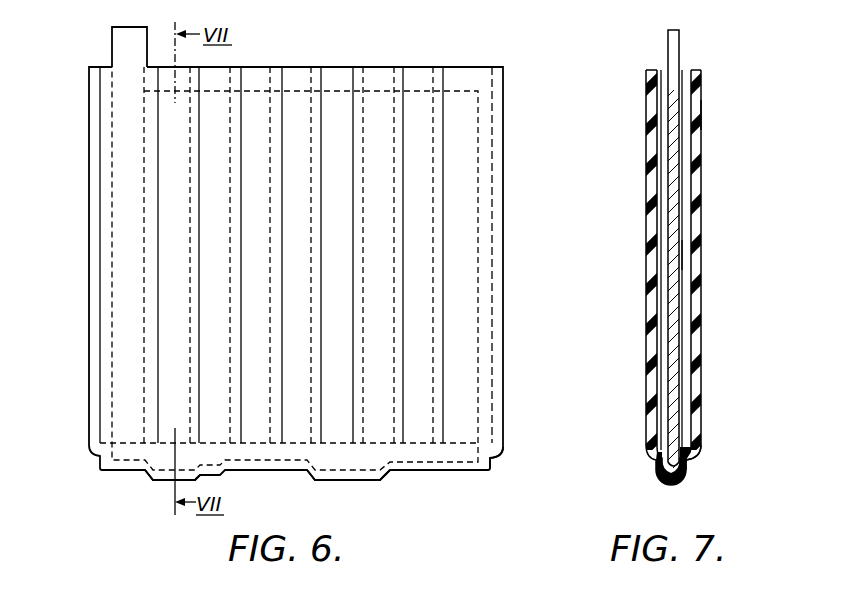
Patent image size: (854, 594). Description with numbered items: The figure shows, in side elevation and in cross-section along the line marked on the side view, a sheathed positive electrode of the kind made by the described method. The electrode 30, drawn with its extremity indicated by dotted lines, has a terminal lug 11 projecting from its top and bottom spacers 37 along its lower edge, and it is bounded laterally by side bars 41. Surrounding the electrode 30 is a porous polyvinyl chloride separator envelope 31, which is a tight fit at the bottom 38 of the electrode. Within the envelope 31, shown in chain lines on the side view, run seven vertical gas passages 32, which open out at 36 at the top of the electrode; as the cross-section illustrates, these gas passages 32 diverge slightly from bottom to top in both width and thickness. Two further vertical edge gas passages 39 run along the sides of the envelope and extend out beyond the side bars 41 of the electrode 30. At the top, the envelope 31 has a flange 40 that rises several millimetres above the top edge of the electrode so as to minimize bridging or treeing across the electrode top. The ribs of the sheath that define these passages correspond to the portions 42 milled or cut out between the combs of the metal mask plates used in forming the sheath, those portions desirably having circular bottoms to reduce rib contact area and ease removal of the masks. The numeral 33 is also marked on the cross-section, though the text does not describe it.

In FIG. 6, the terminal lug 11 is at (120, 53).
In FIG. 7, the terminal lug 11 is at (675, 47).
In FIG. 6, the electrode 30 is at (482, 112).
In FIG. 7, the electrode 30 is at (672, 219).
In FIG. 7, the porous polyvinyl chloride separator envelope 31 is at (697, 115).
In FIG. 6, the gas passages 32 is at (281, 112).
In FIG. 7, the gas passages 32 is at (684, 258).
In FIG. 7, the rear surface layer 33 is at (683, 70).
In FIG. 6, the gas passage openings 36 is at (378, 67).
In FIG. 7, the gas passage openings 36 is at (659, 62).
In FIG. 6, the bottom spacers 37 is at (153, 474).
In FIG. 6, the bottom of the electrode 38 is at (492, 461).
In FIG. 7, the bottom of the electrode 38 is at (692, 465).
In FIG. 6, the vertical edge gas passages 39 is at (100, 176).
In FIG. 6, the flange 40 is at (470, 67).
In FIG. 7, the flange 40 is at (699, 85).
In FIG. 6, the side bars 41 is at (112, 328).
In FIG. 6, the portions between the combs 42 is at (443, 205).